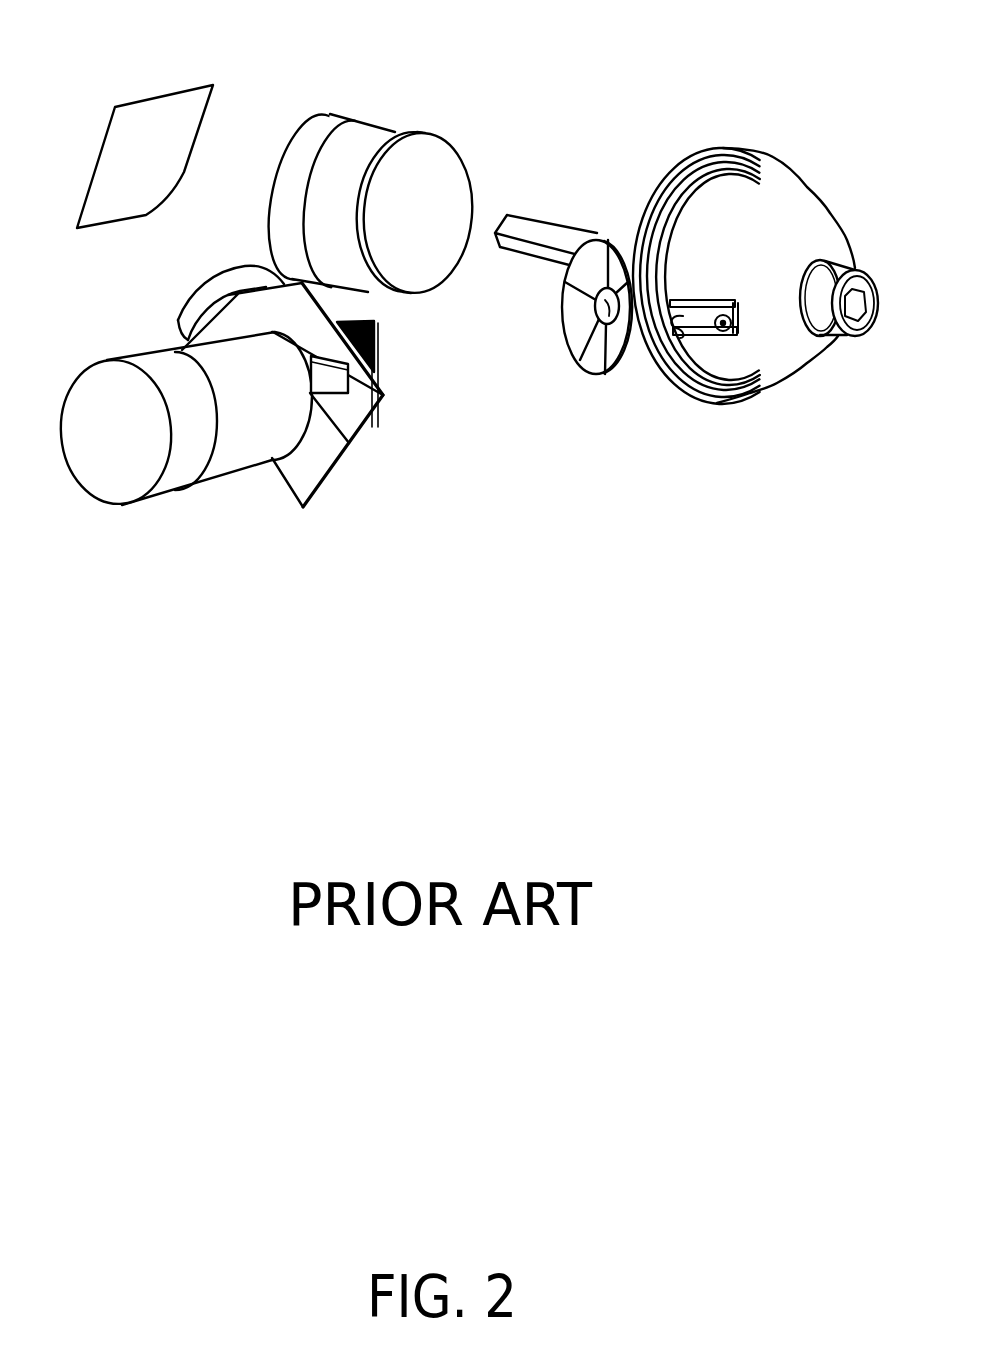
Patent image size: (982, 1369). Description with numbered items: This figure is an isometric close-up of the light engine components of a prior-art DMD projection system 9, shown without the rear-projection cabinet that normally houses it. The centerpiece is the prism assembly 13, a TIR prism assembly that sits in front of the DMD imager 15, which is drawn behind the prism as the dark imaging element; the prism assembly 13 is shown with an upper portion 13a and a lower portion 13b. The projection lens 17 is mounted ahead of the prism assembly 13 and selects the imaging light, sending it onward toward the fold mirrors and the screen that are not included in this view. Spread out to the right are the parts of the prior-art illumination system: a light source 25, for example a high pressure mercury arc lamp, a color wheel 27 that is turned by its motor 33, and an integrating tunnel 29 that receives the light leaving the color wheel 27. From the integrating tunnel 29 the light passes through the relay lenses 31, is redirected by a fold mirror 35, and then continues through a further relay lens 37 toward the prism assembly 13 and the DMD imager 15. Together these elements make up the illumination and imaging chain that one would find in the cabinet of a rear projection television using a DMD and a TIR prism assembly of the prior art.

The DMD projection system 9 is at (632, 562).
The prism assembly 13 is at (325, 452).
The upper housing portion 13a is at (292, 302).
The lower housing portion 13b is at (298, 462).
The DMD imager 15 is at (381, 392).
The projection lens 17 is at (236, 433).
The light source 25 is at (771, 365).
The color wheel 27 is at (601, 367).
The integrating tunnel 29 is at (558, 237).
The relay lenses 31 is at (437, 167).
The motor 33 is at (613, 324).
The fold mirror 35 is at (158, 145).
The relay lens 37 is at (183, 308).